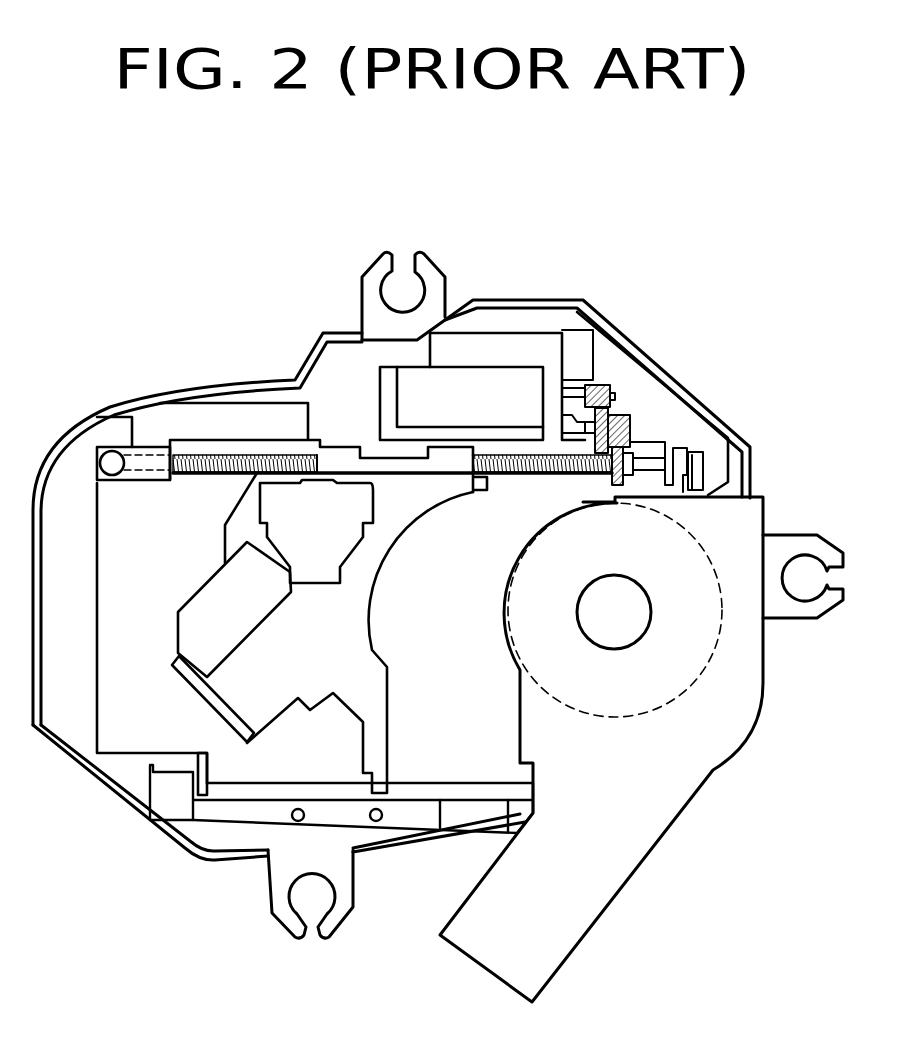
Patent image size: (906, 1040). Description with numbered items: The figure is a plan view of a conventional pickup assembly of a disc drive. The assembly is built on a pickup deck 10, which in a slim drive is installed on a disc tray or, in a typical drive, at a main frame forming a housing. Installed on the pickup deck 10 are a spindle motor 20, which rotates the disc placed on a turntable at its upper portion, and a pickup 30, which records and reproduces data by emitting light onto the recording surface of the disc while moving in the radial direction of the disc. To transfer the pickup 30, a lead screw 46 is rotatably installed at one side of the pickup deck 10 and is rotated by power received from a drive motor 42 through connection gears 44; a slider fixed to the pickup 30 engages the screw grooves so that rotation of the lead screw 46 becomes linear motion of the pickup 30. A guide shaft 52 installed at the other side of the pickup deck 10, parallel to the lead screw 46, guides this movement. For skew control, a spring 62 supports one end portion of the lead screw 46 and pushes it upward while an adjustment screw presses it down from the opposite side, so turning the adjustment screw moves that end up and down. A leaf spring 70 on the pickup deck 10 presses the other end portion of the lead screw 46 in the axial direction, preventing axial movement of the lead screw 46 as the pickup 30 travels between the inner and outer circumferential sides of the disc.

The pickup deck 10 is at (65, 720).
The spindle motor 20 is at (699, 672).
The pickup 30 is at (166, 705).
The drive motor 42 is at (486, 380).
The connection gears 44 is at (600, 383).
The lead screw 46 is at (228, 448).
The guide shaft 52 is at (233, 795).
The spring 62 is at (110, 452).
The leaf spring 70 is at (700, 452).